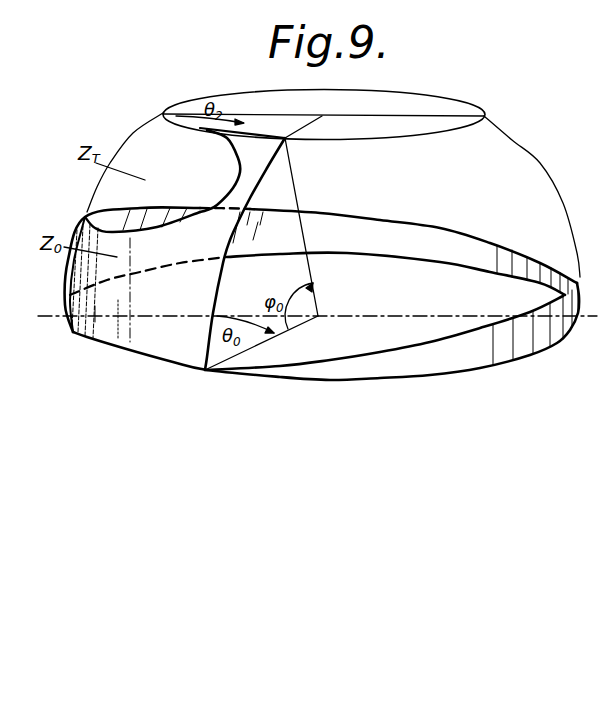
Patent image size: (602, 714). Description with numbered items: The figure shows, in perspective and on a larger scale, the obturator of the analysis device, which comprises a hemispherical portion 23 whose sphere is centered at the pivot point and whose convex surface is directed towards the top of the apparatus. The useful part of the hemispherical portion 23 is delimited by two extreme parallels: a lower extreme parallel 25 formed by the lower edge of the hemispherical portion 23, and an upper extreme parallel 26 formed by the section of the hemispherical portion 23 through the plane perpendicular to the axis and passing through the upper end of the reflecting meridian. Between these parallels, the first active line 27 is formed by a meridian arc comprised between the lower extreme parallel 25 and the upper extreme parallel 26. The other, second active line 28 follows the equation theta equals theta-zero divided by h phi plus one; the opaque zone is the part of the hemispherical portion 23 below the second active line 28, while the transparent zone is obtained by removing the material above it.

The hemispherical portion 23 is at (559, 207).
The lower extreme parallel 25 is at (464, 368).
The upper extreme parallel 26 is at (379, 138).
The first active line 27 is at (213, 285).
The second active line 28 is at (238, 172).